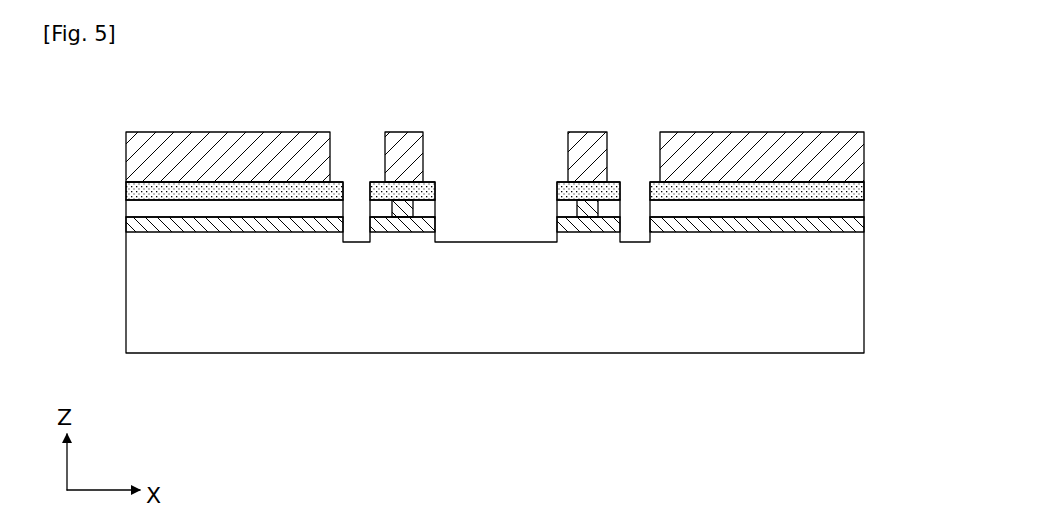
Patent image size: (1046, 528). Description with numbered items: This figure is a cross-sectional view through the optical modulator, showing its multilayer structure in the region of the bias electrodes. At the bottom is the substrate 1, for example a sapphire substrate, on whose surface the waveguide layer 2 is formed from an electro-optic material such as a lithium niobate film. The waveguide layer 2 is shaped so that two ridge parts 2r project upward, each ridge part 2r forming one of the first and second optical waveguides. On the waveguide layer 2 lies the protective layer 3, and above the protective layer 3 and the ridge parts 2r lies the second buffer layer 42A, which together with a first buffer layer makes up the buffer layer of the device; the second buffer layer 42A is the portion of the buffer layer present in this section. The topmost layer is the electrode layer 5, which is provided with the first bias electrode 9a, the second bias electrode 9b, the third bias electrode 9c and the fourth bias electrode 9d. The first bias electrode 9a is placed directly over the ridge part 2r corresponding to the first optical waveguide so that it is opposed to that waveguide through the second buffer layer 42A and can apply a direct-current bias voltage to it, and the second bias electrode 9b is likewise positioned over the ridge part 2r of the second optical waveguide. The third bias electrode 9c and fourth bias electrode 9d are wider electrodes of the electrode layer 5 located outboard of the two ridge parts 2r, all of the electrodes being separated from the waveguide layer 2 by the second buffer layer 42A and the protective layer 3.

The substrate 1 is at (762, 333).
The waveguide layer 2 is at (820, 228).
The ridge part 2r is at (393, 210).
The protective layer 3 is at (848, 207).
The second buffer layer 42A is at (848, 188).
The electrode layer 5 is at (527, 125).
The first bias electrode 9a is at (405, 138).
The second bias electrode 9b is at (587, 140).
The third bias electrode 9c is at (230, 138).
The fourth bias electrode 9d is at (740, 138).